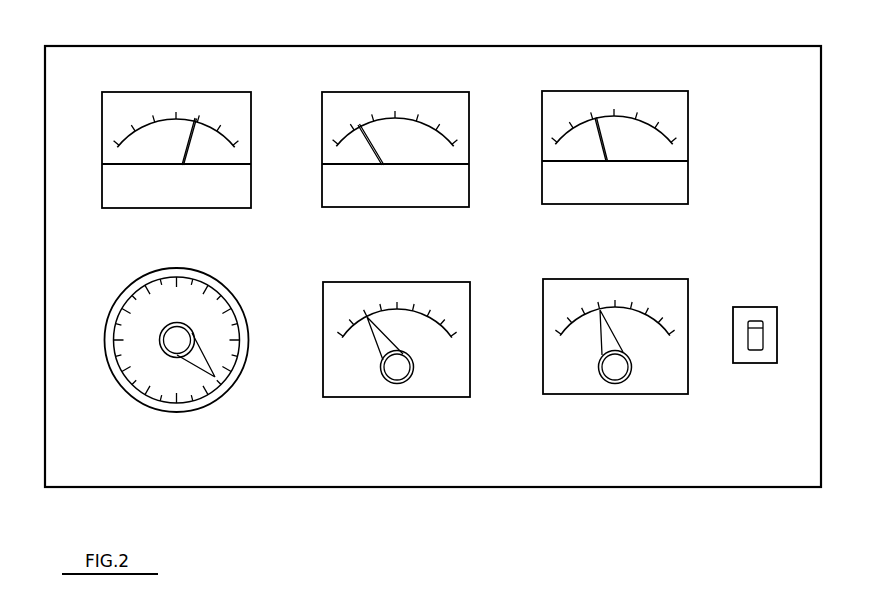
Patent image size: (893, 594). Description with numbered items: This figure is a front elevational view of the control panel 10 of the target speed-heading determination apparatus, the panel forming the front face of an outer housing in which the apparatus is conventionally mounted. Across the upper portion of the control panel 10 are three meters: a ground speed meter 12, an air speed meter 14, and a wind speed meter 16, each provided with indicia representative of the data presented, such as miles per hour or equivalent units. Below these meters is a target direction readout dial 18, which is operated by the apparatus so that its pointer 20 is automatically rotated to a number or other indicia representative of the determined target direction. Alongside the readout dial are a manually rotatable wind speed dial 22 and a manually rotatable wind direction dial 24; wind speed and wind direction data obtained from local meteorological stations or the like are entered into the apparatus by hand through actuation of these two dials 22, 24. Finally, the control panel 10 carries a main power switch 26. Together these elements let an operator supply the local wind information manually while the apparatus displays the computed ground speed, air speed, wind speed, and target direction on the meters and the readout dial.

The control panel 10 is at (798, 120).
The ground speed meter 12 is at (198, 101).
The air speed meter 14 is at (422, 102).
The wind speed meter 16 is at (651, 100).
The target direction readout dial 18 is at (160, 358).
The pointer 20 is at (167, 335).
The manually rotatable wind speed dial 22 is at (345, 378).
The manually rotatable wind direction dial 24 is at (562, 373).
The main power switch 26 is at (757, 319).